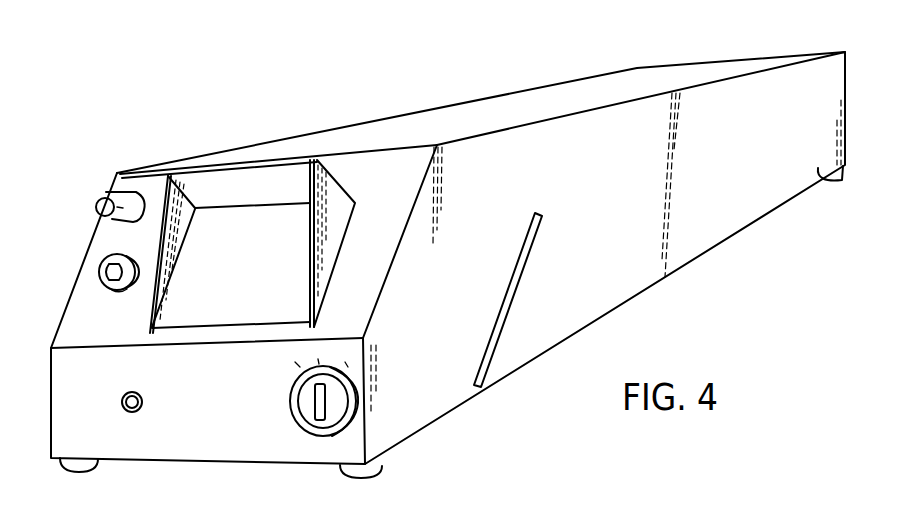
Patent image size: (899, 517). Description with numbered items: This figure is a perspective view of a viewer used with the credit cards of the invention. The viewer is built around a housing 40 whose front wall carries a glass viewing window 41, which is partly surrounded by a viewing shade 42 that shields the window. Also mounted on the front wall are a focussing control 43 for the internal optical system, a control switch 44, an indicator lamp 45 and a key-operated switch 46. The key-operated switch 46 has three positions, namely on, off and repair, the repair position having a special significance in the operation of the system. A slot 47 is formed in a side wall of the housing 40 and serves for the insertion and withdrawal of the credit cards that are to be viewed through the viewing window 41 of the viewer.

The housing 40 is at (559, 77).
The glass viewing window 41 is at (176, 312).
The viewing shade 42 is at (331, 178).
The focussing control 43 is at (102, 207).
The control switch 44 is at (100, 272).
The indicator lamp 45 is at (128, 408).
The key-operated switch 46 is at (340, 402).
The slot 47 is at (502, 326).